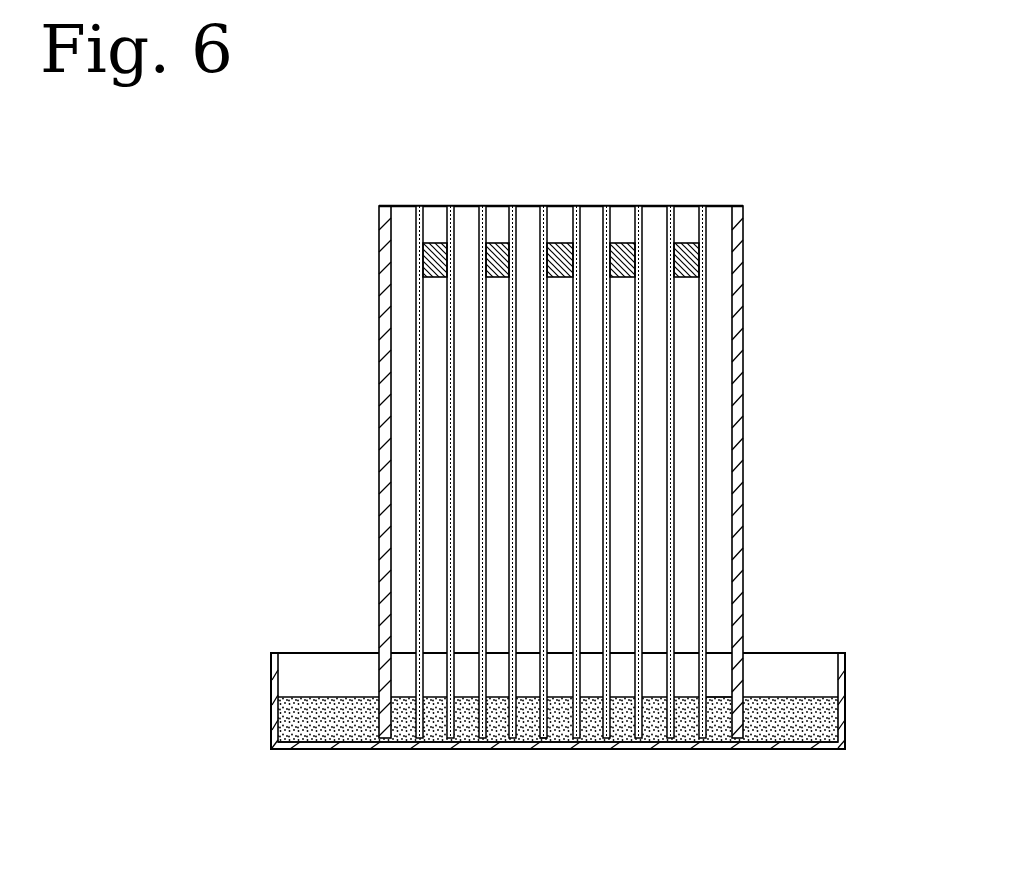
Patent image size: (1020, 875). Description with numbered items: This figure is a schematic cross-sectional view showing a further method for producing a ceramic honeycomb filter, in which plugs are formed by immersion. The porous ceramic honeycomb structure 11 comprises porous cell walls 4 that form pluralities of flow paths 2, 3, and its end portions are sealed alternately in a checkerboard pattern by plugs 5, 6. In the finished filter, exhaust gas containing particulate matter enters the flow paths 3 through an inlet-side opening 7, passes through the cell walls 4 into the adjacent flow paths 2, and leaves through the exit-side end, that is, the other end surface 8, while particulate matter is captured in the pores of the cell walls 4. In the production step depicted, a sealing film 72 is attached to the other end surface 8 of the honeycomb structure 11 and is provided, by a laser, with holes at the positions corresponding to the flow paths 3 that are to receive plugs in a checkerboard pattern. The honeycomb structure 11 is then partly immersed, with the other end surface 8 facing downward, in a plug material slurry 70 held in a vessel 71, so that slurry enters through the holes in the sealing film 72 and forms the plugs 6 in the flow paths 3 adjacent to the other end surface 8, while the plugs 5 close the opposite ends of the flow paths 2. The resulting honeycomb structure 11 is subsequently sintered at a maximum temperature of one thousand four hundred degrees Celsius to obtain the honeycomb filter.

The flow path 2 is at (684, 220).
The flow path 3 is at (592, 222).
The porous cell wall 4 is at (534, 222).
The plug 5 is at (688, 253).
The plug 6 is at (723, 718).
The inlet-side opening 7 is at (434, 206).
The other end surface 8 is at (634, 740).
The porous ceramic honeycomb structure 11 is at (372, 254).
The plug material slurry 70 is at (323, 718).
The vessel 71 is at (845, 658).
The sealing film 72 is at (552, 735).